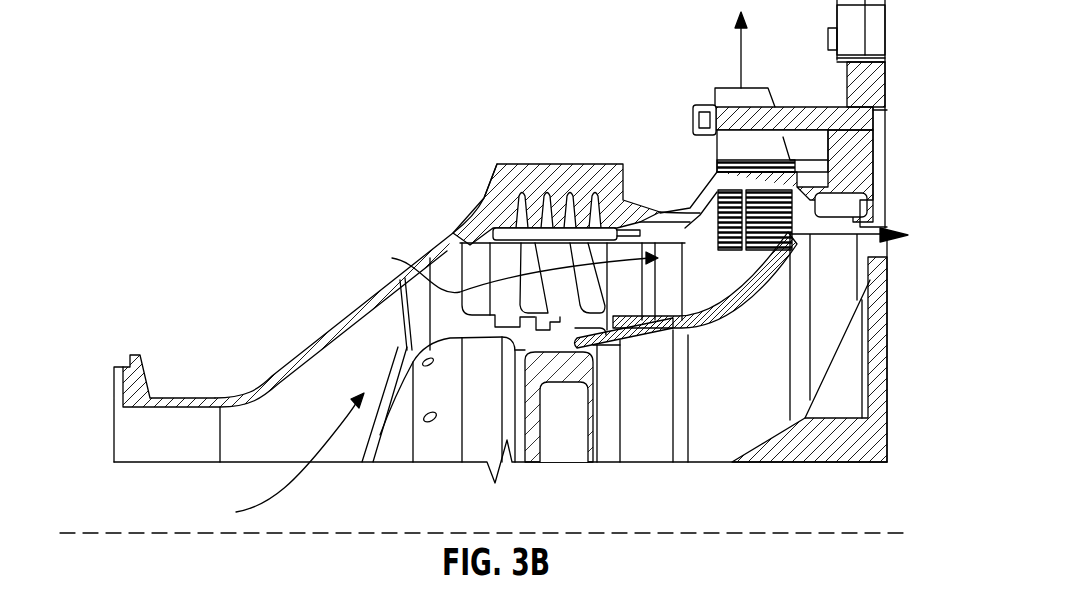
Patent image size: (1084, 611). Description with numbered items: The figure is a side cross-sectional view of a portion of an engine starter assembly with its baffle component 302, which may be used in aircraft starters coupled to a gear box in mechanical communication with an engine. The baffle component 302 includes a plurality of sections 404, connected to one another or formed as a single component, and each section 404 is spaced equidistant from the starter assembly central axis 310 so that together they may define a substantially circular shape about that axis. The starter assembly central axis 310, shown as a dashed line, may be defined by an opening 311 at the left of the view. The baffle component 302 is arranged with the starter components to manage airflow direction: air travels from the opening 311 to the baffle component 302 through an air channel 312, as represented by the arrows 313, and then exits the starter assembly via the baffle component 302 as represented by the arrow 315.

The baffle component 302 is at (711, 79).
The starter assembly central axis 310 is at (901, 530).
The opening 311 is at (113, 390).
The air channel 312 is at (340, 361).
The arrows 313 is at (305, 450).
The arrow 315 is at (733, 38).
The section 404 is at (522, 181).